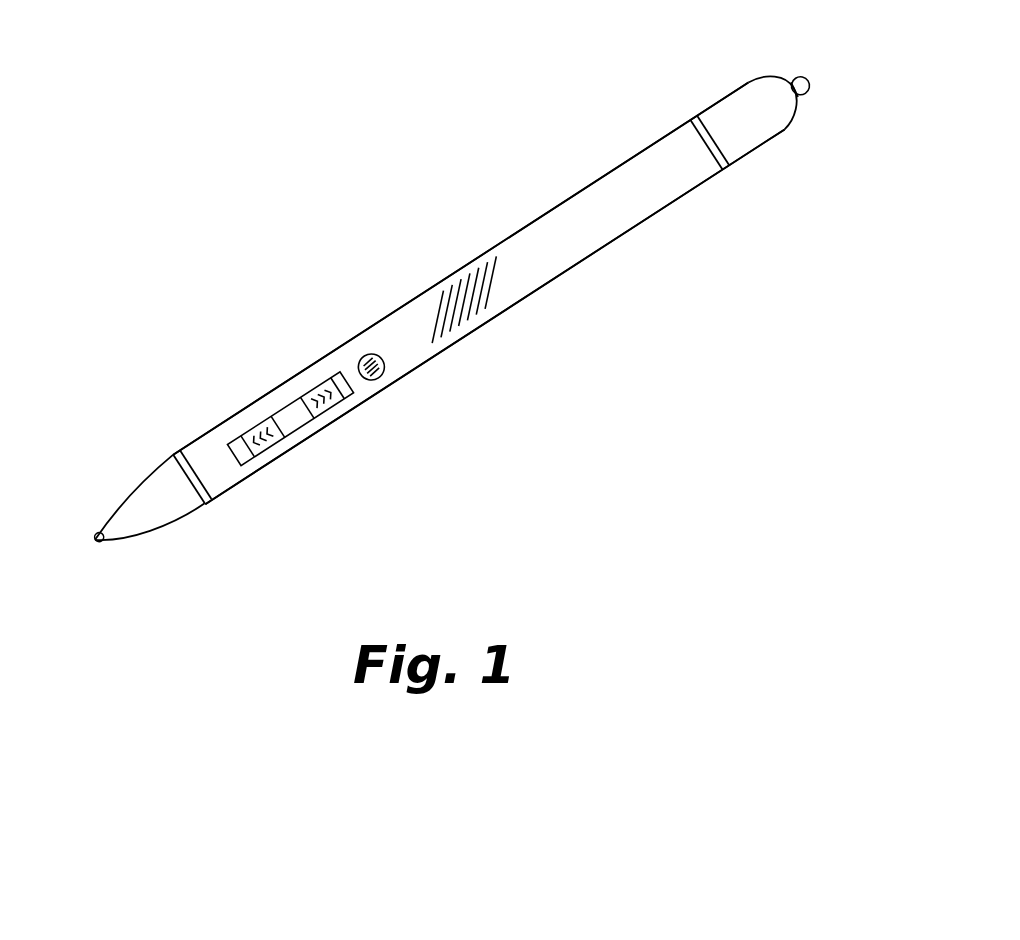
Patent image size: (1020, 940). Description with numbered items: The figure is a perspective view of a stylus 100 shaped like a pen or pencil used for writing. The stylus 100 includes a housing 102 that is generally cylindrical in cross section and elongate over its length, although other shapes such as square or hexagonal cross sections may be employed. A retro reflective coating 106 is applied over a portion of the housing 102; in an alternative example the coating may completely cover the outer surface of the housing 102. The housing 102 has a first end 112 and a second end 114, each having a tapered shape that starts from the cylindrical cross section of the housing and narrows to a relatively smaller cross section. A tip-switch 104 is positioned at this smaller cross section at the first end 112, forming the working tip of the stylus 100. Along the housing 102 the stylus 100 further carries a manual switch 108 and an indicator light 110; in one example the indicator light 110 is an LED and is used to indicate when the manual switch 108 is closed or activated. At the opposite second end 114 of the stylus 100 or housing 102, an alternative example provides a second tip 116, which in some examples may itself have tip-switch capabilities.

The stylus 100 is at (165, 243).
The housing 102 is at (560, 282).
The tip-switch 104 is at (95, 556).
The retro reflective coating 106 is at (468, 297).
The manual switch 108 is at (330, 410).
The indicator light 110 is at (383, 375).
The first end 112 is at (160, 503).
The second end 114 is at (738, 142).
The second tip 116 is at (793, 83).